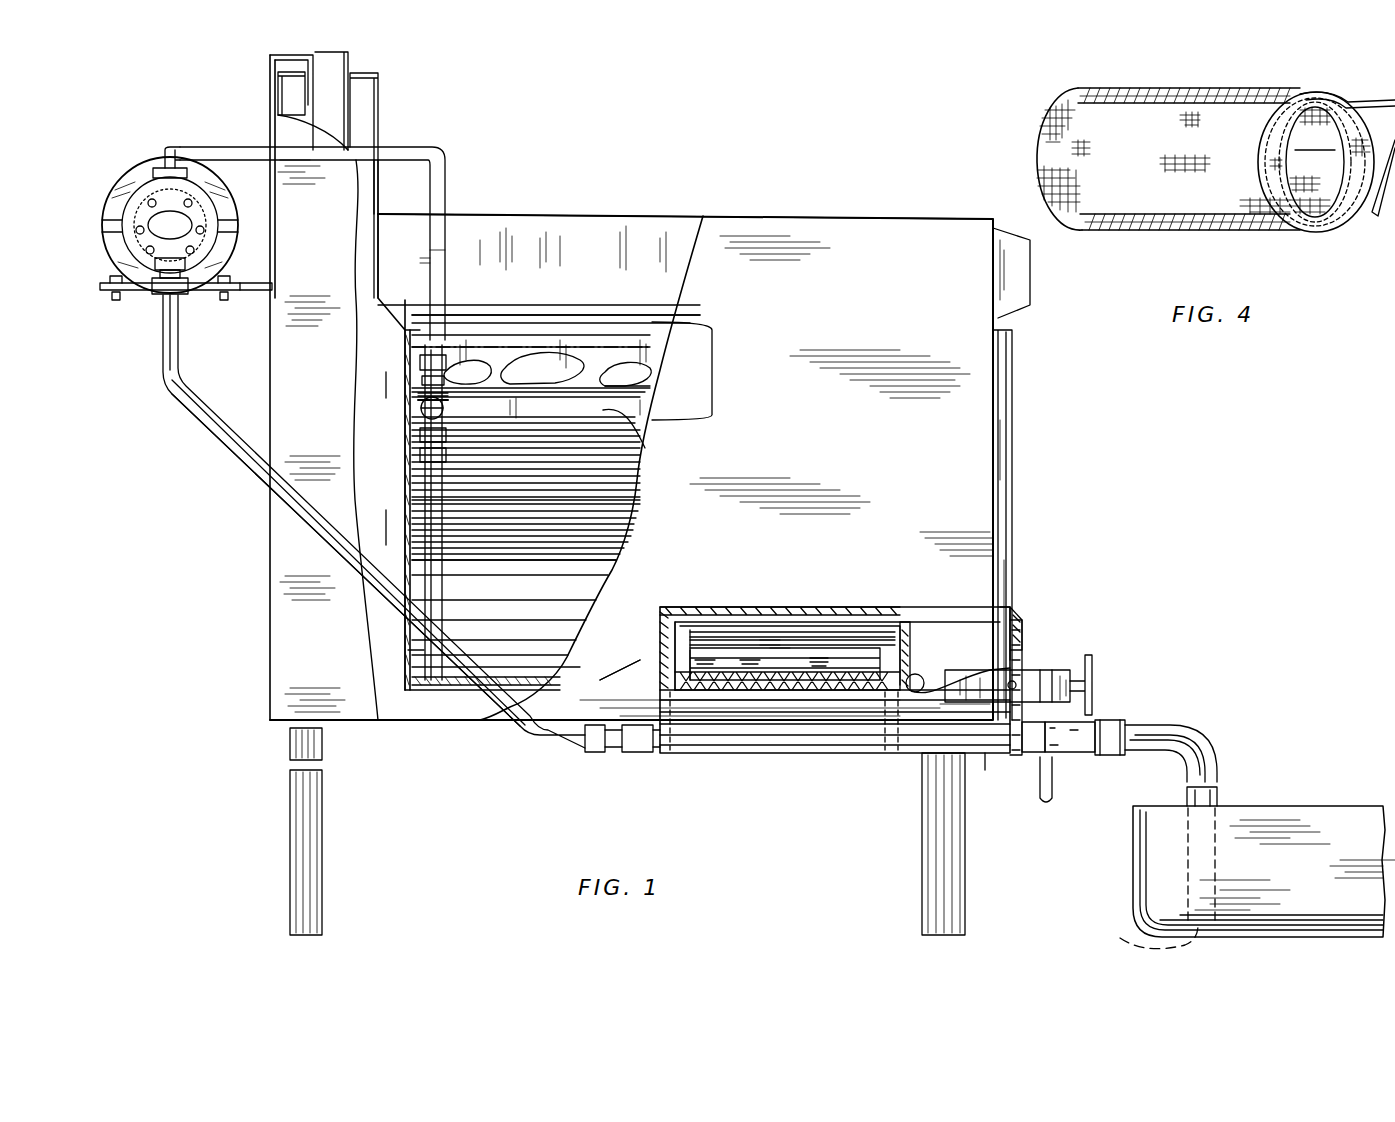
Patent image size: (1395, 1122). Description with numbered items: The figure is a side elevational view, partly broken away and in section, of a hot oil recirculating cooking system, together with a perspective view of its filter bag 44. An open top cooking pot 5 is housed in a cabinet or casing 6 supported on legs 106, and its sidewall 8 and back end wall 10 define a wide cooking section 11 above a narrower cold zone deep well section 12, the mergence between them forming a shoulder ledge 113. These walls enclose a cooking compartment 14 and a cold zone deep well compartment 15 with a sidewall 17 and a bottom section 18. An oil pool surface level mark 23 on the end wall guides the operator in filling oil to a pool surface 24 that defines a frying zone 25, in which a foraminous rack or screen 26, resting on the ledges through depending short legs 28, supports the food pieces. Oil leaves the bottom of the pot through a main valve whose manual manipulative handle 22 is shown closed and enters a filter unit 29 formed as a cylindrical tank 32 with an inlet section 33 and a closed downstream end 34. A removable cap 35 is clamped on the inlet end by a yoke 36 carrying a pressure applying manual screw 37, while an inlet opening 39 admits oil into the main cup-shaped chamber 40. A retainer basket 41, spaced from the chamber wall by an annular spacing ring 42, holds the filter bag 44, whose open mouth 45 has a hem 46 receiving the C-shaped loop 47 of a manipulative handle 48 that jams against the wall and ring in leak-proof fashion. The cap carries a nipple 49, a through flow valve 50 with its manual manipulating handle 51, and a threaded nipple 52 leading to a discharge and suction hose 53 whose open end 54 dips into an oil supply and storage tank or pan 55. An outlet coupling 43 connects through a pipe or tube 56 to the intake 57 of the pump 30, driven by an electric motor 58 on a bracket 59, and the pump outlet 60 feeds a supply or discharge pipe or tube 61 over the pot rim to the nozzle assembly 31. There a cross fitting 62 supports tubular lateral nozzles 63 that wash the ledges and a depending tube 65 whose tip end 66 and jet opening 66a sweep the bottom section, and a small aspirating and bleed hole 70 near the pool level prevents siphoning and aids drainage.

In FIG. 1, the open top cooking pot 5 is at (624, 208).
In FIG. 1, the cabinet or casing 6 is at (852, 309).
In FIG. 1, the sidewall 8 is at (510, 328).
In FIG. 1, the back end wall 10 is at (404, 340).
In FIG. 1, the cooking section 11 is at (715, 370).
In FIG. 1, the cold zone deep well section 12 is at (385, 520).
In FIG. 1, the cooking compartment 14 is at (664, 333).
In FIG. 1, the cold zone deep well compartment 15 is at (562, 494).
In FIG. 1, the sidewall of cold zone deep well 17 is at (606, 562).
In FIG. 1, the bottom section 18 is at (566, 668).
In FIG. 1, the manual manipulative handle 22 is at (985, 775).
In FIG. 1, the oil pool surface level mark 23 is at (422, 336).
In FIG. 1, the pool surface 24 is at (531, 339).
In FIG. 1, the frying zone 25 is at (385, 378).
In FIG. 1, the foraminous rack or screen 26 is at (640, 392).
In FIG. 1, the depending short legs 28 is at (416, 400).
In FIG. 1, the filter unit 29 is at (742, 768).
In FIG. 1, the pump 30 is at (160, 272).
In FIG. 1, the nozzle assembly 31 is at (452, 406).
In FIG. 1, the cylindrical tank 32 is at (712, 600).
In FIG. 1, the inlet section 33 is at (835, 625).
In FIG. 1, the downstream end 34 is at (662, 672).
In FIG. 1, the removable cap 35 is at (1016, 636).
In FIG. 1, the yoke 36 is at (1042, 680).
In FIG. 1, the pressure applying manual screw 37 is at (1092, 680).
In FIG. 1, the inlet opening 39 is at (918, 678).
In FIG. 1, the main cup-shaped chamber 40 is at (806, 625).
In FIG. 1, the retainer basket 41 is at (752, 625).
In FIG. 1, the annular spacing ring 42 is at (925, 614).
In FIG. 1, the outlet coupling 43 is at (640, 750).
In FIG. 1, the filter bag 44 is at (695, 632).
In FIG. 4, the filter bag 44 is at (1108, 228).
In FIG. 4, the open mouth 45 is at (1312, 138).
In FIG. 1, the hem 46 is at (882, 656).
In FIG. 4, the hem 46 is at (1300, 228).
In FIG. 4, the C-shaped loop 47 is at (1328, 90).
In FIG. 1, the manipulative handle 48 is at (918, 612).
In FIG. 4, the manipulative handle 48 is at (1382, 210).
In FIG. 1, the nipple 49 is at (1015, 757).
In FIG. 1, the through flow valve 50 is at (1065, 755).
In FIG. 1, the manual manipulating handle 51 is at (1046, 803).
In FIG. 1, the threaded nipple 52 is at (1112, 712).
In FIG. 1, the discharge and suction hose 53 is at (1185, 798).
In FIG. 1, the open end 54 is at (1141, 934).
In FIG. 1, the oil supply and storage tank or pan 55 is at (1295, 878).
In FIG. 1, the pipe or tube 56 is at (252, 480).
In FIG. 1, the intake 57 is at (182, 270).
In FIG. 1, the electric motor 58 is at (150, 144).
In FIG. 1, the bracket 59 is at (243, 282).
In FIG. 1, the outlet 60 is at (178, 165).
In FIG. 1, the supply or discharge pipe or tube 61 is at (418, 150).
In FIG. 1, the cross fitting 62 is at (416, 428).
In FIG. 1, the tubular lateral nozzles 63 is at (440, 418).
In FIG. 1, the depending tube 65 is at (446, 490).
In FIG. 1, the tip end 66 is at (436, 672).
In FIG. 1, the jet opening 66a is at (406, 653).
In FIG. 1, the aspirating and bleed hole 70 is at (440, 350).
In FIG. 1, the legs 106 is at (290, 775).
In FIG. 1, the shoulder ledge 113 is at (648, 438).